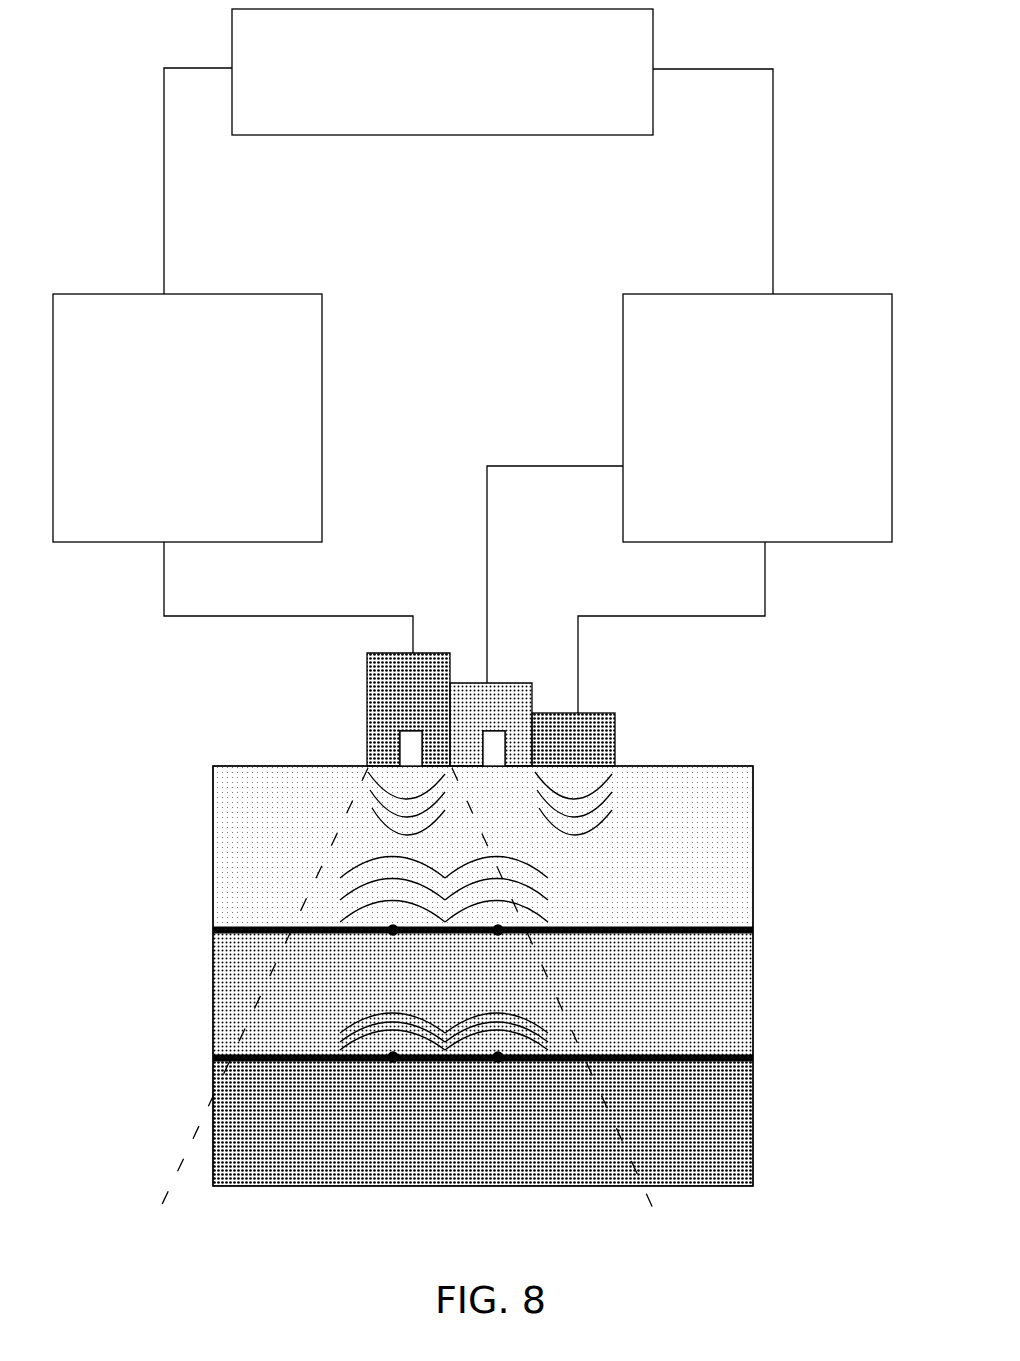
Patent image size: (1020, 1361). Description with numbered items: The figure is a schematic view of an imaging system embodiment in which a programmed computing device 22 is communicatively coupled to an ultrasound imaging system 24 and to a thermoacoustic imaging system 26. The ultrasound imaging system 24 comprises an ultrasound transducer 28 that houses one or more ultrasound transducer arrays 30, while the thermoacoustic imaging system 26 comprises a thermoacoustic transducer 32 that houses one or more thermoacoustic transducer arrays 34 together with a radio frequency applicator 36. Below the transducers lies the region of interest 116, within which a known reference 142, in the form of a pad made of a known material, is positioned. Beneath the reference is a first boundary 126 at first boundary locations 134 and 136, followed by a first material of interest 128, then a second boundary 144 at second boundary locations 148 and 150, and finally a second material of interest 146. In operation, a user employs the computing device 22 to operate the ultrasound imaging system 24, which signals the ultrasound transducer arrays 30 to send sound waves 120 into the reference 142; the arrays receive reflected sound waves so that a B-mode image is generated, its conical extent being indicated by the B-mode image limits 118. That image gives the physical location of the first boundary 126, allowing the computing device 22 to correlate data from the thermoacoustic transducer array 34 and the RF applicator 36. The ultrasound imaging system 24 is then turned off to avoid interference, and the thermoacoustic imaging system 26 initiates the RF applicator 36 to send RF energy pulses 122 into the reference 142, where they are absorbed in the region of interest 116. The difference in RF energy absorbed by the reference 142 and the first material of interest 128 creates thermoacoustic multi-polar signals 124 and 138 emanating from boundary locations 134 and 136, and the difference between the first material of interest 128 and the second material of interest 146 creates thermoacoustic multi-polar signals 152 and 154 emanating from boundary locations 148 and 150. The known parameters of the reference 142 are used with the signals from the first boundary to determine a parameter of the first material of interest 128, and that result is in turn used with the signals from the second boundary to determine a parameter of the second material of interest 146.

The computing device 22 is at (420, 136).
The ultrasound imaging system 24 is at (322, 375).
The thermoacoustic imaging system 26 is at (623, 378).
The ultrasound transducer 28 is at (367, 739).
The ultrasound transducer arrays 30 is at (403, 731).
The thermoacoustic transducer 32 is at (505, 733).
The thermoacoustic transducer arrays 34 is at (532, 684).
The radio frequency applicator 36 is at (613, 741).
The region of interest 116 is at (770, 877).
The B-mode image limits 118 is at (285, 946).
The ultrasound signals 120 is at (380, 818).
The RF energy pulses 122 is at (593, 819).
The thermoacoustic multi-polar signal 124 is at (358, 912).
The first boundary 126 is at (743, 932).
The first material of interest 128 is at (740, 990).
The first boundary location 134 is at (393, 930).
The first boundary location 136 is at (498, 930).
The thermoacoustic multi-polar signal 138 is at (466, 912).
The known reference 142 is at (734, 846).
The second boundary 144 is at (740, 1058).
The second material of interest 146 is at (740, 1118).
The second boundary location 148 is at (393, 1057).
The second boundary location 150 is at (498, 1057).
The thermoacoustic multi-polar signal 152 is at (345, 1050).
The thermoacoustic multi-polar signal 154 is at (546, 1052).